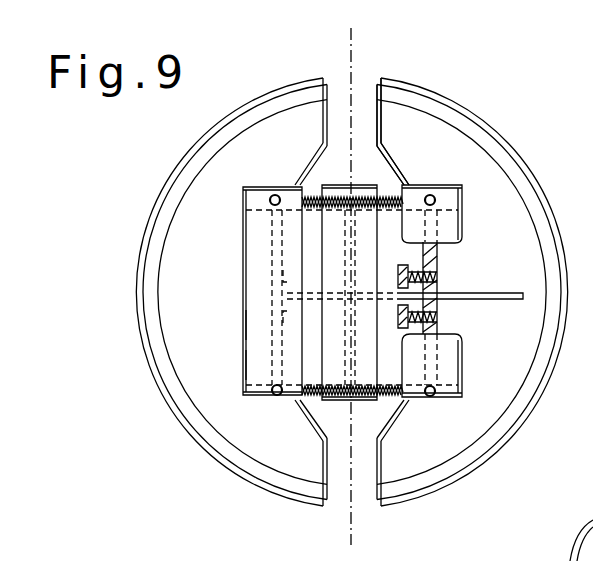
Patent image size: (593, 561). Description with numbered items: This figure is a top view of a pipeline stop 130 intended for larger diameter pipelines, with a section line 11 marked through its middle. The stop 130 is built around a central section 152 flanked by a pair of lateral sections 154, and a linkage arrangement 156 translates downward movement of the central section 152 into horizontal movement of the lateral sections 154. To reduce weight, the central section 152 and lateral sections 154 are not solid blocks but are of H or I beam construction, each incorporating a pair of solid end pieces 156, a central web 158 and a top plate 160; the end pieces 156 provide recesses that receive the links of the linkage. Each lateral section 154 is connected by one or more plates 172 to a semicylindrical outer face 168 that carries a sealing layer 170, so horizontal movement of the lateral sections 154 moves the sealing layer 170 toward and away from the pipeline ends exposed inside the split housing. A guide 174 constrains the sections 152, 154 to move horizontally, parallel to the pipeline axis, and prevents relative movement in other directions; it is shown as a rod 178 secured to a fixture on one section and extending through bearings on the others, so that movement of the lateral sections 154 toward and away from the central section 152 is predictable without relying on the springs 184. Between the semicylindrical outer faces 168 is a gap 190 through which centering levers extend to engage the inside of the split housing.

The section line 11- 11 is at (336, 17).
The pipeline stop 130 is at (509, 88).
The central section 152 is at (385, 180).
The lateral sections 154 is at (236, 288).
The end pieces 156 is at (298, 185).
The central web 158 is at (266, 241).
The top plate 160 is at (245, 322).
The semicylindrical outer face 168 is at (233, 440).
The sealing layer 170 is at (159, 391).
The plates 172 is at (214, 366).
The guide 174 is at (453, 281).
The rod 178 is at (477, 299).
The springs 184 is at (290, 192).
The gap 190 is at (330, 90).